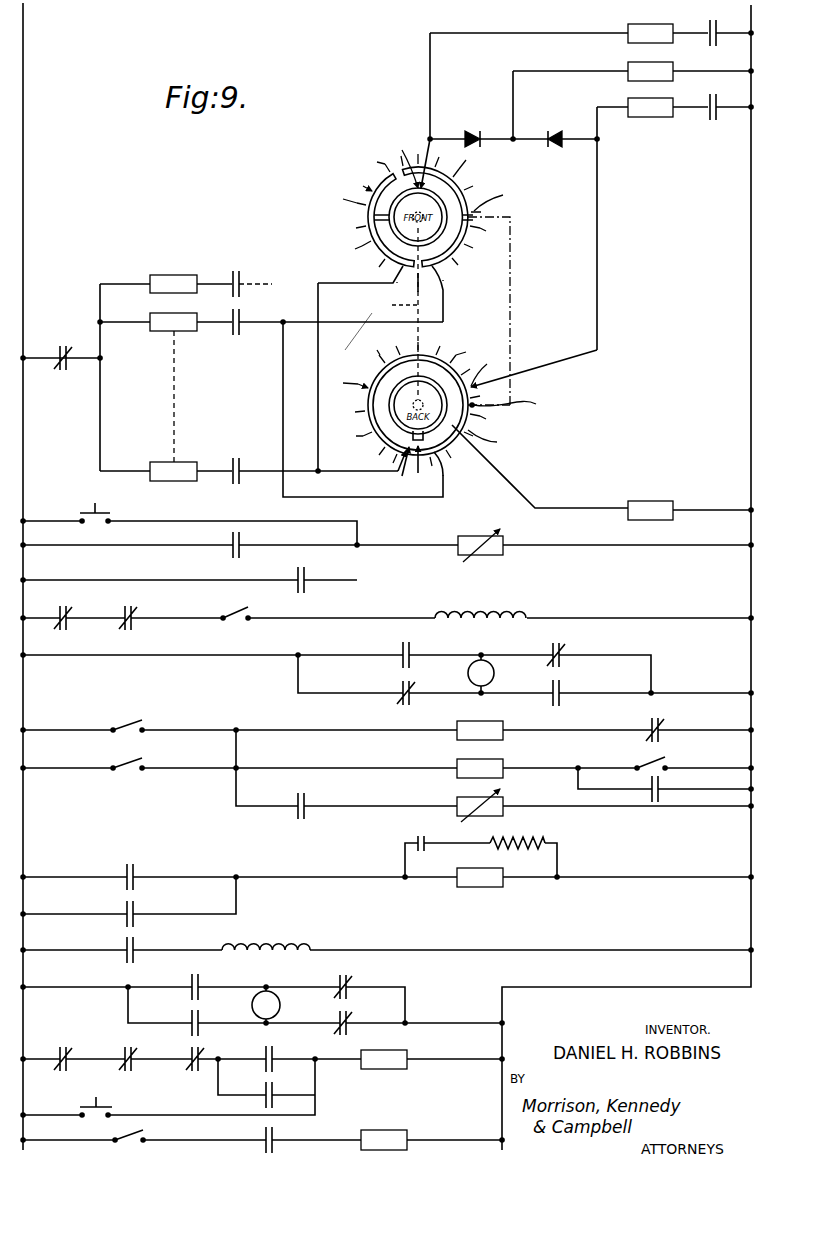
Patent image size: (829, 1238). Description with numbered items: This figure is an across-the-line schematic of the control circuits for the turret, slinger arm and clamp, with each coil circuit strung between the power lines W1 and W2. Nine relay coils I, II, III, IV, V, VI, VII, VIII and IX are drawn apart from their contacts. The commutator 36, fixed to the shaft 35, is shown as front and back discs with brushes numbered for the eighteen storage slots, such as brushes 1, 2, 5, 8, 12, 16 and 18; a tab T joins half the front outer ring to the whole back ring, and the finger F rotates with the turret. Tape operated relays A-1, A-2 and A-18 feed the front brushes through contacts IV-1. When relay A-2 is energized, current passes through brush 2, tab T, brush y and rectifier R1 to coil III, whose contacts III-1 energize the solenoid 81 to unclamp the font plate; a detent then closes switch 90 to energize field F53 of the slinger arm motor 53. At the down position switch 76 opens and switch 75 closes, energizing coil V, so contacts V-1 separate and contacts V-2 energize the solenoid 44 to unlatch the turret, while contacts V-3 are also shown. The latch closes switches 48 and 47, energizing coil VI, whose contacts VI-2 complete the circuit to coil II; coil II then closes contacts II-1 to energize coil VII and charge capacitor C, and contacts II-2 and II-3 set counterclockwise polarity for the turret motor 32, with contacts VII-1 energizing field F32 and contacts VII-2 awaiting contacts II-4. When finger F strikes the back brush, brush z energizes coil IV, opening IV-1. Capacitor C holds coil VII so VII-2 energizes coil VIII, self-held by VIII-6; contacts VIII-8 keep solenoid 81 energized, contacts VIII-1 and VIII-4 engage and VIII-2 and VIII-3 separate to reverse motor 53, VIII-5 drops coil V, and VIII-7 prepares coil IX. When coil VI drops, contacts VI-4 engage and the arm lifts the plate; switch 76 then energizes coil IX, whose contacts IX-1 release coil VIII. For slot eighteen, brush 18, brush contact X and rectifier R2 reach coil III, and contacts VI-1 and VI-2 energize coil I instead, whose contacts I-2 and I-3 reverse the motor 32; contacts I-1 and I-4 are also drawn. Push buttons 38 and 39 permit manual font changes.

The line W1 is at (38, 576).
The line W2 is at (640, 576).
The coil I is at (650, 33).
The coil II is at (650, 107).
The coil III is at (650, 71).
The coil IV is at (650, 510).
The coil V is at (480, 730).
The coil VI is at (480, 768).
The coil VII is at (480, 877).
The coil VIII is at (384, 1059).
The coil IX is at (384, 1140).
The contacts VI-1 is at (712, 47).
The contacts VI-2 is at (713, 121).
The contacts VI-4 is at (128, 631).
The rectifier R1 is at (552, 131).
The rectifier R2 is at (470, 131).
The brush contact X is at (405, 161).
The brush y is at (482, 368).
The brush z is at (487, 440).
The finger F is at (399, 471).
The brush 12 is at (372, 255).
The commutator 36 is at (339, 290).
The brush 16 is at (349, 344).
The brush 18 is at (393, 377).
The brush 8 is at (464, 250).
The brush 5 is at (487, 326).
The brush 2 is at (449, 378).
The brush 1 is at (420, 384).
The tab T is at (510, 295).
The shaft 35 is at (381, 324).
The contacts IV-1 is at (70, 341).
The tape operated relay A-1 is at (198, 275).
The tape operated relay A-2 is at (198, 331).
The tape operated relay A-18 is at (201, 462).
The solenoid 81 is at (471, 544).
The push button 38 is at (93, 523).
The contacts III-1 is at (233, 558).
The contacts VIII-8 is at (318, 576).
The contacts V-1 is at (65, 608).
The switch 90 is at (240, 610).
The field F53 is at (480, 604).
The contacts VIII-1 is at (403, 645).
The contacts VIII-2 is at (403, 685).
The contacts VIII-3 is at (555, 643).
The contacts VIII-4 is at (555, 681).
The contacts VIII-5 is at (656, 720).
The contacts VIII-6 is at (269, 1088).
The contacts VIII-7 is at (270, 1128).
The slinger arm motor 53 is at (481, 662).
The switch 75 is at (119, 723).
The switch 48 is at (121, 760).
The switch 47 is at (646, 760).
The contacts V-2 is at (301, 819).
The contacts V-3 is at (655, 803).
The solenoid 44 is at (461, 800).
The capacitor C is at (423, 834).
The contacts I-1 is at (133, 865).
The contacts I-2 is at (192, 975).
The contacts I-3 is at (343, 975).
The contacts I-4 is at (191, 1073).
The contacts II-1 is at (133, 908).
The contacts II-2 is at (192, 1012).
The contacts II-3 is at (343, 1012).
The contacts II-4 is at (128, 1046).
The contacts VII-1 is at (133, 944).
The contacts VII-2 is at (269, 1046).
The turret motor field F32 is at (266, 937).
The turret motor 32 is at (280, 1003).
The contacts IX-1 is at (65, 1046).
The push button 39 is at (85, 1117).
The switch 76 is at (137, 1132).